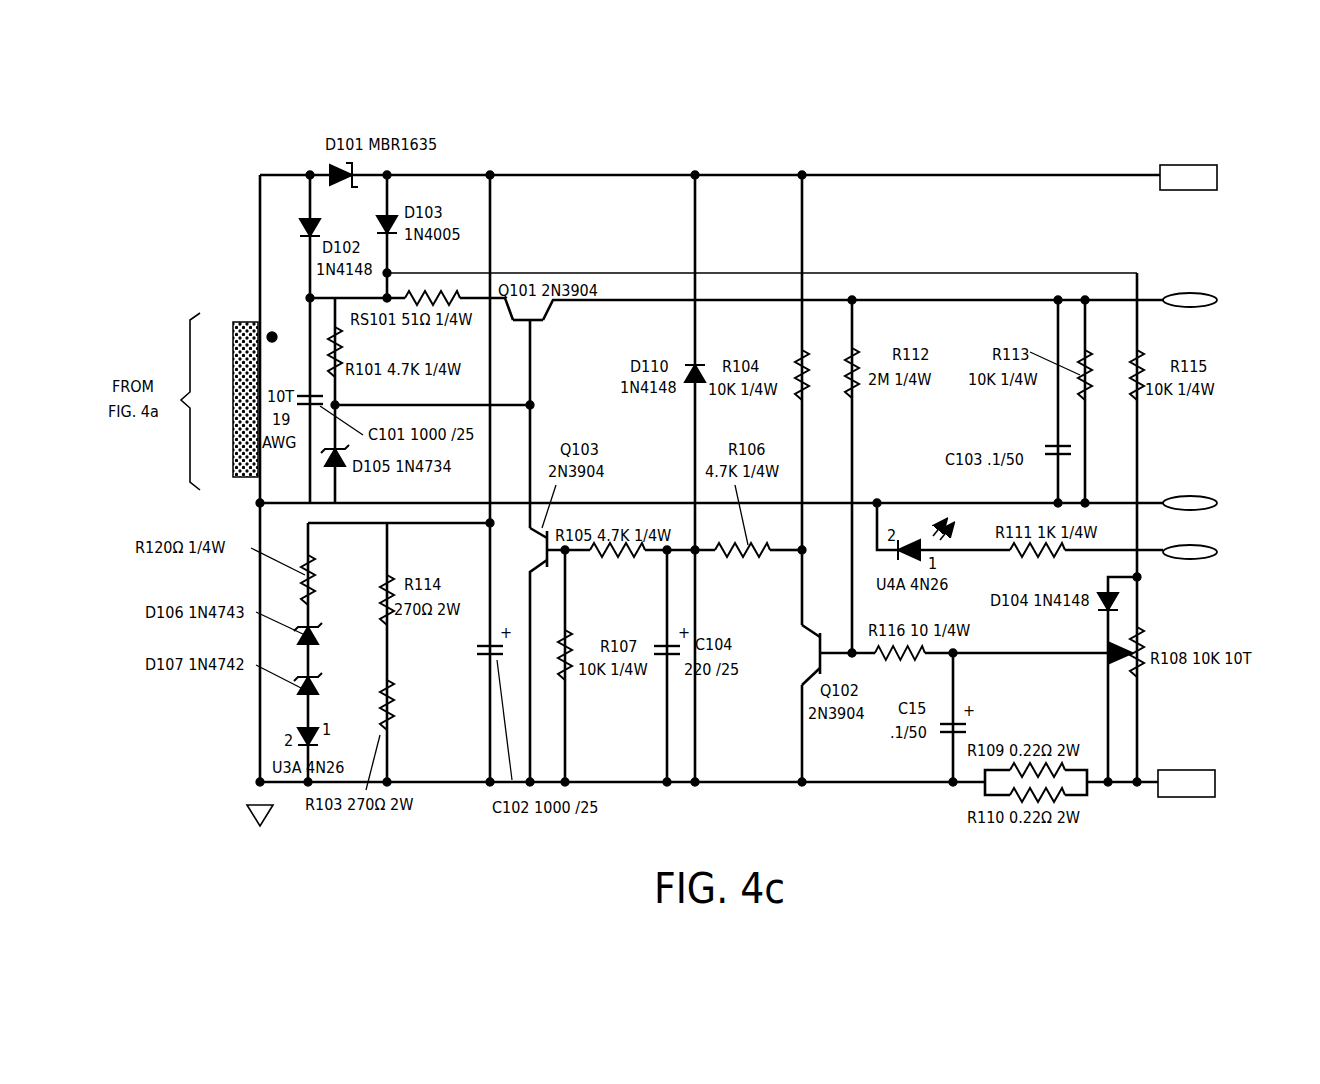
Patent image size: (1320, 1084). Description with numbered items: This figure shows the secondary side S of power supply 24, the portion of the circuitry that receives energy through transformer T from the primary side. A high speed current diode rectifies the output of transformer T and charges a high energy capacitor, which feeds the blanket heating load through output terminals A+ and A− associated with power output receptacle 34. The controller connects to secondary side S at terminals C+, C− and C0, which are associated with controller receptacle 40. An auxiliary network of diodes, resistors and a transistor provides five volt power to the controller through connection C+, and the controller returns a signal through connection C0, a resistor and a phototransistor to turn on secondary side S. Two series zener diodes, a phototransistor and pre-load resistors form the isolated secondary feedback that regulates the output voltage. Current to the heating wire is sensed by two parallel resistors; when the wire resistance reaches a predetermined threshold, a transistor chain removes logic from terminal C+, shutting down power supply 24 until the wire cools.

The power output receptacle 34 is at (1217, 178).
The controller receptacle 40 is at (1217, 550).
The power supply 24 is at (301, 838).
The secondary side S is at (833, 155).
The transformer T is at (221, 262).